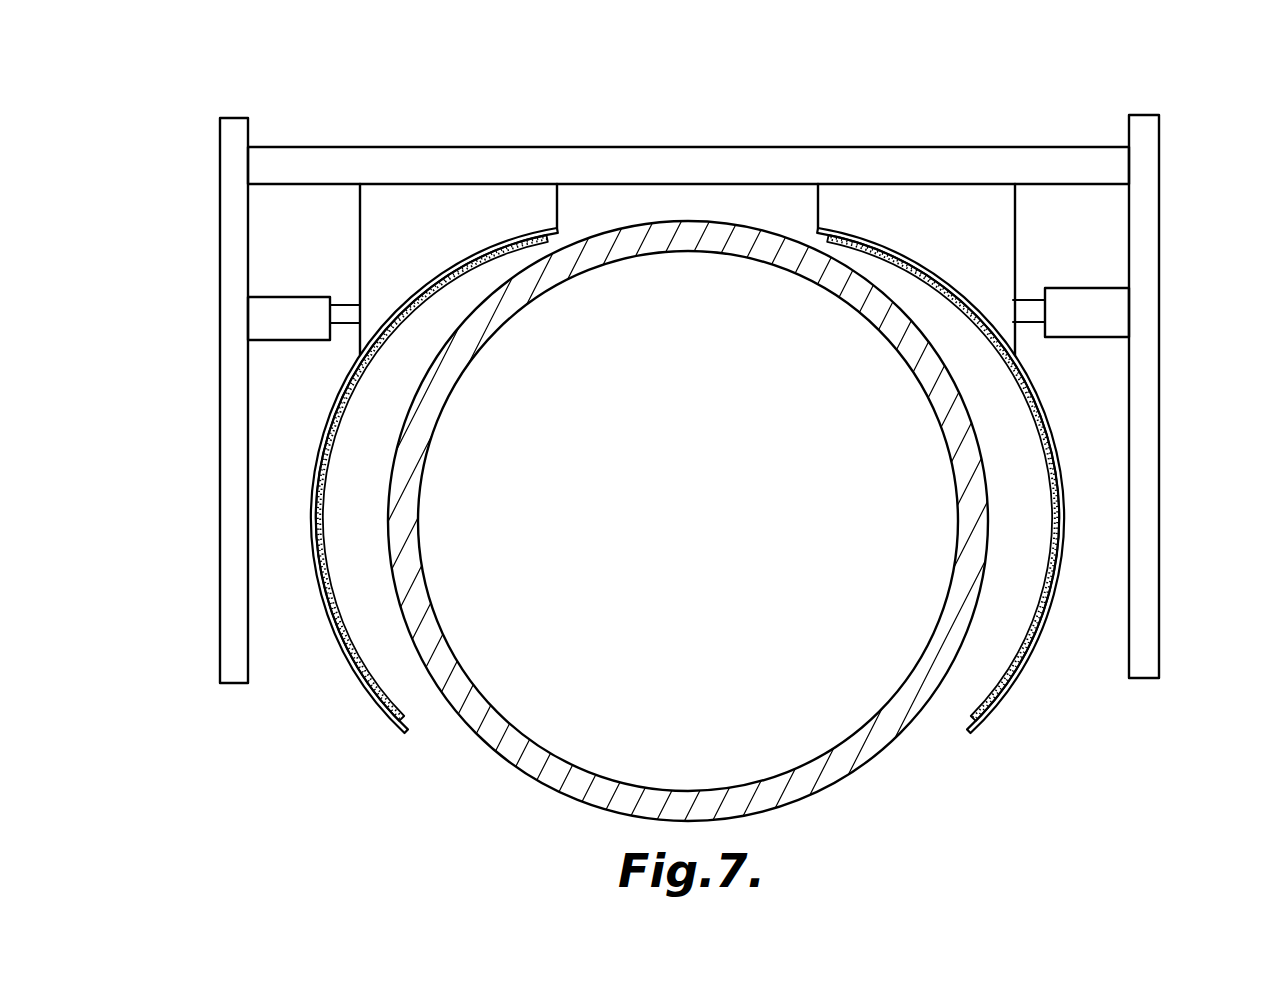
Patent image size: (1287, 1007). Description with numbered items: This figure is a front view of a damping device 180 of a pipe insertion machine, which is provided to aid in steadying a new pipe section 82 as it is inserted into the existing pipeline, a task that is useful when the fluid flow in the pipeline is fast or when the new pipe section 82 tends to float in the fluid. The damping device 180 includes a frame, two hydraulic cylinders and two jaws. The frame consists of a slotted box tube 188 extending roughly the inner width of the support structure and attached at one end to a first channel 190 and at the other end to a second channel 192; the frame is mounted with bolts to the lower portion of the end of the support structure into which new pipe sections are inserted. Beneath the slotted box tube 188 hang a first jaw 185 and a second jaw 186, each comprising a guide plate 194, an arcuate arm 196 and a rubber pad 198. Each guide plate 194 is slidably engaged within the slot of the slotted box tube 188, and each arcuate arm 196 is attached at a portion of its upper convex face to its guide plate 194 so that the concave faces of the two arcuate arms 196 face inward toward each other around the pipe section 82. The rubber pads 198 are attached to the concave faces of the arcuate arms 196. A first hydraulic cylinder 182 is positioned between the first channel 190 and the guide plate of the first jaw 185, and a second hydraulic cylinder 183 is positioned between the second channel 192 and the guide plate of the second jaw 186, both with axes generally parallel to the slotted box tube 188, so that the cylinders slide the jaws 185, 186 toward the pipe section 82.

The damping device 180 is at (696, 435).
The slotted box tube 188 is at (657, 158).
The first channel 190 is at (230, 225).
The second channel 192 is at (1147, 228).
The first hydraulic cylinder 182 is at (268, 312).
The second hydraulic cylinder 183 is at (1112, 315).
The guide plate 194 is at (492, 197).
The new pipe section 82 is at (885, 733).
The arcuate arm 196 is at (340, 647).
The rubber pad 198 is at (372, 687).
The first jaw 185 is at (366, 765).
The second jaw 186 is at (1062, 697).